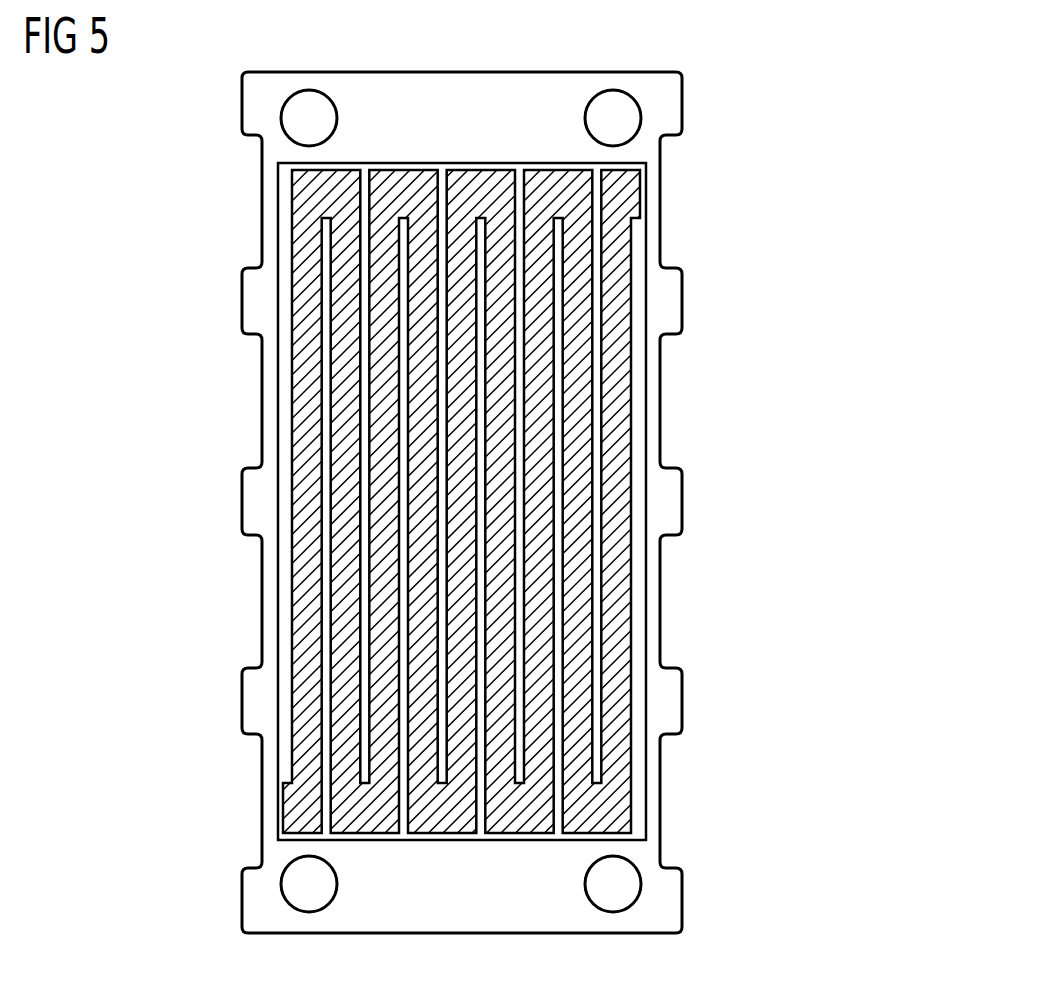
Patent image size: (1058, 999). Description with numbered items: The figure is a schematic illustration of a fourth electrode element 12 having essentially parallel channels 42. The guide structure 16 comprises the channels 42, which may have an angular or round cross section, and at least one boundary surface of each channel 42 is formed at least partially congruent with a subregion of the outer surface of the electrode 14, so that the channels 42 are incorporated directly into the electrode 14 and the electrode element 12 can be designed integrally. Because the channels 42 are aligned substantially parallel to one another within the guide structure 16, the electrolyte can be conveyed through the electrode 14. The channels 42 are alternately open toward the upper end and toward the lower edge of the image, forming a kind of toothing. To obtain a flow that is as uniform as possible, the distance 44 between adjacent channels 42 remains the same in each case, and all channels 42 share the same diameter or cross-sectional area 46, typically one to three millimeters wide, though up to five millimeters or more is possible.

The electrode element 12 is at (300, 193).
The electrode 14 is at (612, 578).
The guide structure 16 is at (520, 160).
The channel 42 is at (403, 432).
The distance 44 is at (438, 227).
The cross-sectional area 46 is at (408, 148).